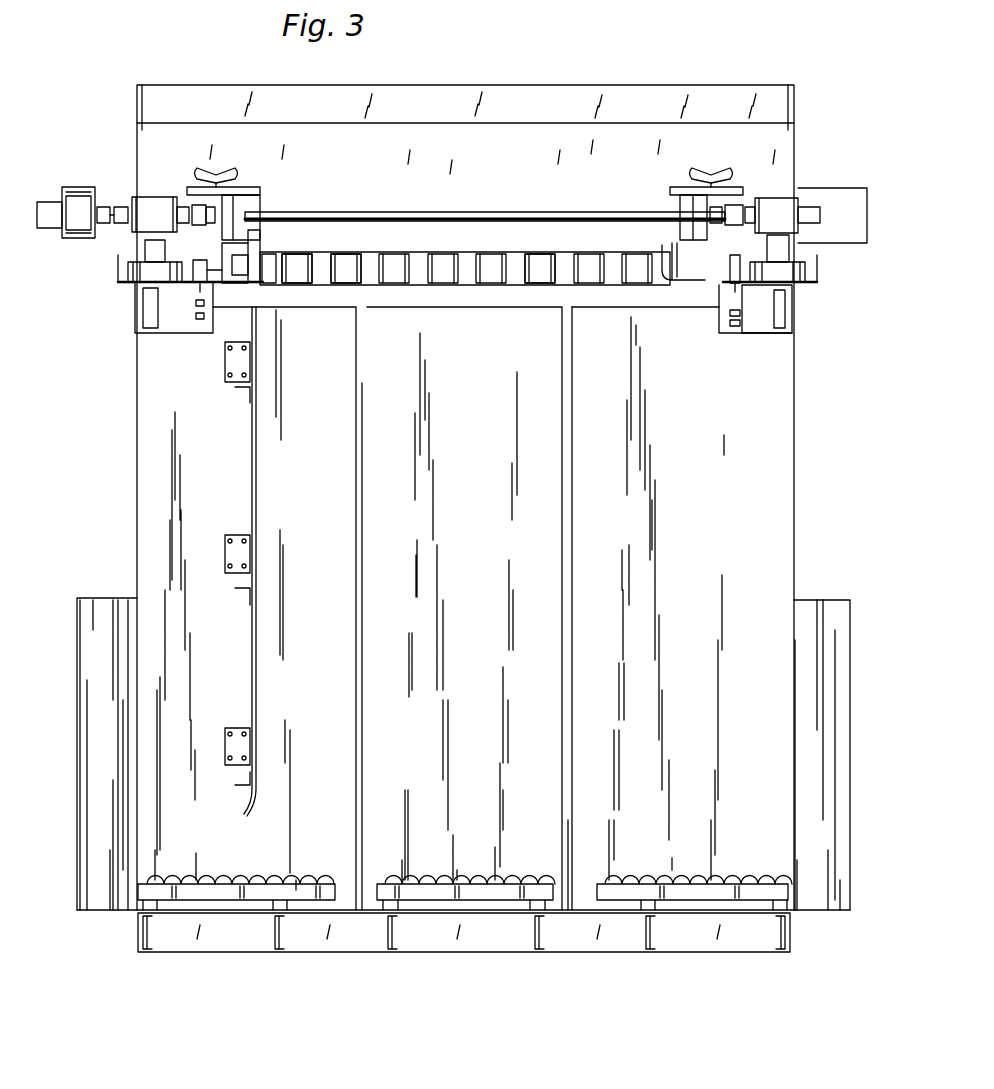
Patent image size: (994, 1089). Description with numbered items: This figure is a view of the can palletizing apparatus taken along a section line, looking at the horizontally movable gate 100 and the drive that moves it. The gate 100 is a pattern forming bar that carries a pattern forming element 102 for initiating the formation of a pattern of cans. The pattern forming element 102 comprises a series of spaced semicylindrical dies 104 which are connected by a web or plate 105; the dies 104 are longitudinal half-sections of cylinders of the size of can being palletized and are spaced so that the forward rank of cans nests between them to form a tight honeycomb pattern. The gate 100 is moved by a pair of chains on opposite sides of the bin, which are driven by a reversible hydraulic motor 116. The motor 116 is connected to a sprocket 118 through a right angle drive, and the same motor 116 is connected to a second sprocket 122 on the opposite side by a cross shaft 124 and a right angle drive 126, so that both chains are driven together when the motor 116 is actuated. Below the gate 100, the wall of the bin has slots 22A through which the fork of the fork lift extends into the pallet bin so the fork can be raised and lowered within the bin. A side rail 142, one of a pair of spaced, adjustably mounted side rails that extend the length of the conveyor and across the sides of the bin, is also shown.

The slots 22A is at (366, 520).
The horizontally movable gate 100 is at (447, 243).
The pattern forming element 102 is at (513, 257).
The semicylindrical dies 104 is at (338, 258).
The web or plate 105 is at (327, 246).
The reversible hydraulic motor 116 is at (80, 198).
The sprocket 118 is at (177, 186).
The sprocket 122 is at (798, 285).
The cross shaft 124 is at (454, 213).
The right angle drive 126 is at (780, 207).
The side rail 142 is at (258, 240).